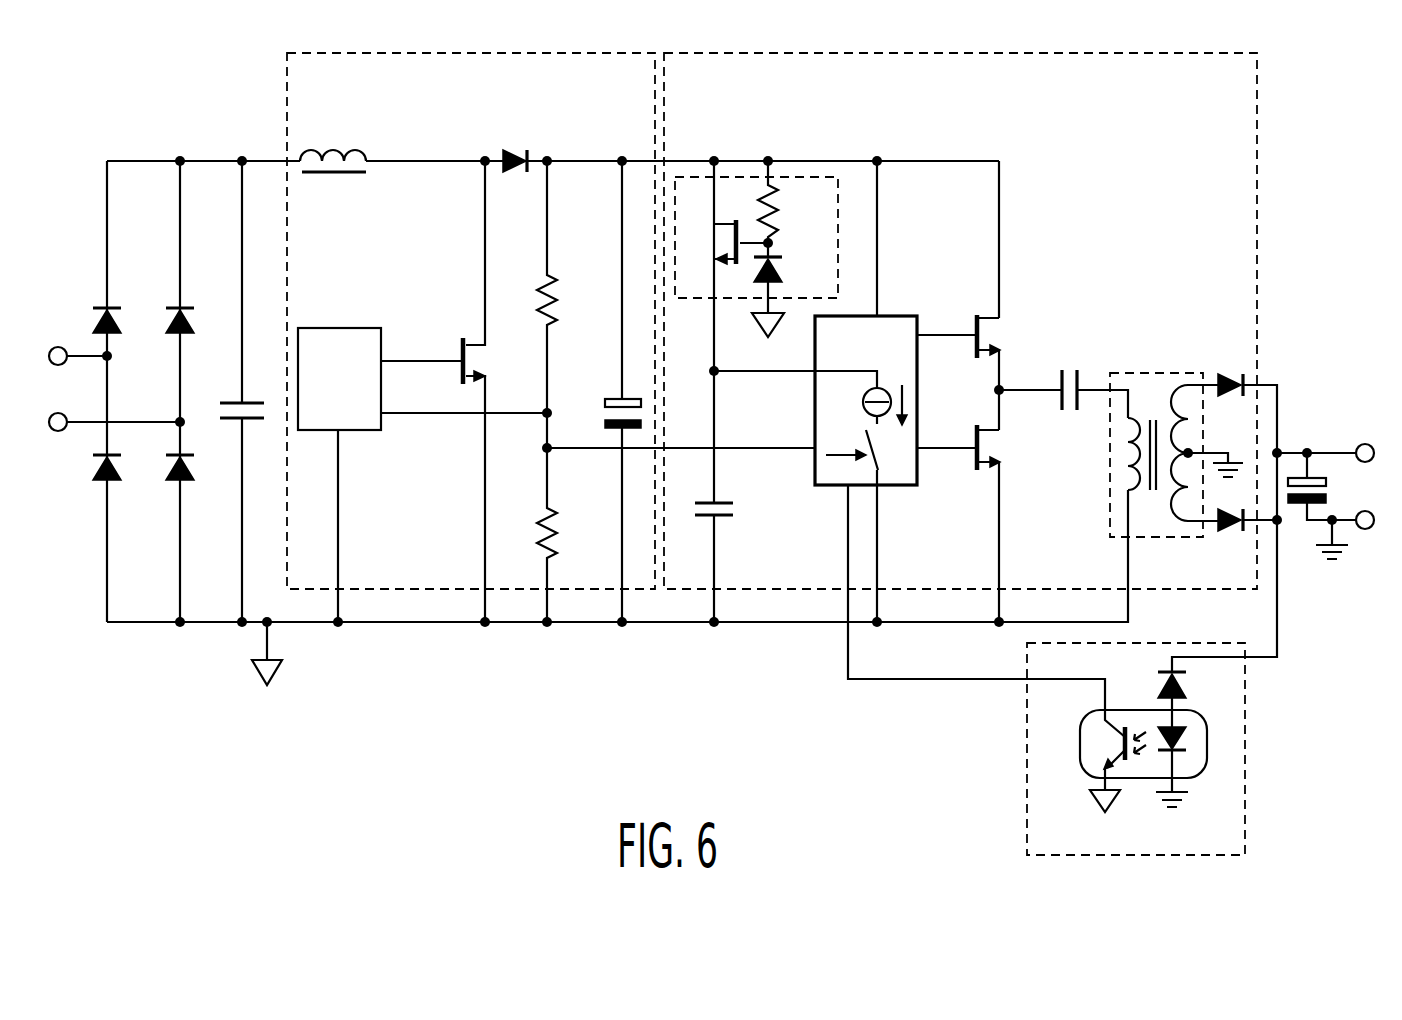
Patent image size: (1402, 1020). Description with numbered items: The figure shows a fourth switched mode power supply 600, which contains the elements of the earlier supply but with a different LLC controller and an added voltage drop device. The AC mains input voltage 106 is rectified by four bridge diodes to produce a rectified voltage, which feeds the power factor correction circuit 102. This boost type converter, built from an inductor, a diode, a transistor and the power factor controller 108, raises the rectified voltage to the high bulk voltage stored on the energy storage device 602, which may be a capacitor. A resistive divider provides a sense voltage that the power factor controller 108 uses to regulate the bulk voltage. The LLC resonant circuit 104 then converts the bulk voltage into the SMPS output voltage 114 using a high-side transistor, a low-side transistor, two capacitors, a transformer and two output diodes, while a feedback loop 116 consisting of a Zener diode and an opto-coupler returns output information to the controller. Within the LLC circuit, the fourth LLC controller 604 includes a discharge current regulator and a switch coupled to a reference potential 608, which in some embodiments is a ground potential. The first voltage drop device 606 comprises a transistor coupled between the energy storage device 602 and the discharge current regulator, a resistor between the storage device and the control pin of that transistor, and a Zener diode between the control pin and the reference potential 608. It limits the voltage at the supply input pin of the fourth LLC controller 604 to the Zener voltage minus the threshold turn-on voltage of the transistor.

The fourth switched mode power supply 600 is at (82, 90).
The power factor correction circuit 102 is at (548, 53).
The LLC resonant circuit 104 is at (1073, 53).
The AC mains input voltage 106 is at (50, 340).
The power factor controller (IC1) 108 is at (358, 398).
The SMPS output voltage (Vout) 114 is at (1364, 443).
The feedback loop 116 is at (1027, 742).
The energy storage device 602 is at (608, 419).
The fourth LLC controller (IC2) 604 is at (893, 487).
The first voltage drop device 606 is at (822, 177).
The reference potential 608 is at (256, 673).